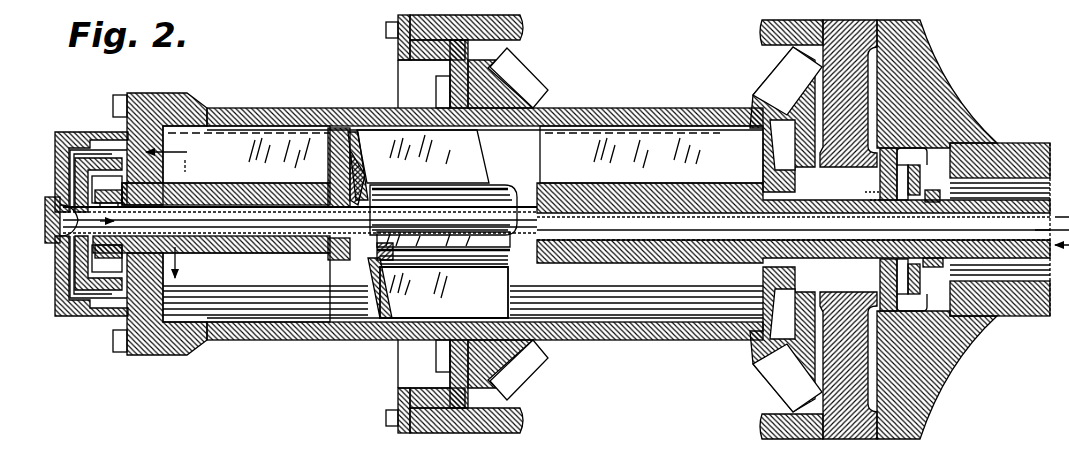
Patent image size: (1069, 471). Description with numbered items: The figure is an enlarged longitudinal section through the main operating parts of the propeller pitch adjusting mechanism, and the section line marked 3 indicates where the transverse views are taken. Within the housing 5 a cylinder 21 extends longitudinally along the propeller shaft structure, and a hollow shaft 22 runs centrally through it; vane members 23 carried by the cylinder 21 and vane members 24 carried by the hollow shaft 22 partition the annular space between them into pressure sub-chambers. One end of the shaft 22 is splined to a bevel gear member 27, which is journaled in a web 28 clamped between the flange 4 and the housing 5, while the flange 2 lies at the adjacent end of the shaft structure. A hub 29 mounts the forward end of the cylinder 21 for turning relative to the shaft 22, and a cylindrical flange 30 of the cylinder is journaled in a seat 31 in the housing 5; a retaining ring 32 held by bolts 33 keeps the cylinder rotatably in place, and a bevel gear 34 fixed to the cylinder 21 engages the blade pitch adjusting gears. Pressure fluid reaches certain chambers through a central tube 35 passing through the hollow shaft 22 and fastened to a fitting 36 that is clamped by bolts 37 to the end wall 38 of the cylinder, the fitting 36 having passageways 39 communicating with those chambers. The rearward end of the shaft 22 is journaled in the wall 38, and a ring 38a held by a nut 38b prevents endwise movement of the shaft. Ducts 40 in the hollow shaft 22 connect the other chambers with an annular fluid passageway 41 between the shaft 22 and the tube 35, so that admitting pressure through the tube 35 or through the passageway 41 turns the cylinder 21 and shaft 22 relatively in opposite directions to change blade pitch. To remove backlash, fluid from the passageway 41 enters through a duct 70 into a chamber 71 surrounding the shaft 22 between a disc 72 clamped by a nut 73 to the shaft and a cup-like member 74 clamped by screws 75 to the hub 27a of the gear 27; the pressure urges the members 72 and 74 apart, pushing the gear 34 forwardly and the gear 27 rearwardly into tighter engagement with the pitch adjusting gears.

The housing flange 2 is at (1003, 143).
The section line 3- 3 is at (258, 68).
The flange 4 is at (930, 85).
The housing 5 is at (520, 27).
The cylinder 21 is at (598, 108).
The hollow shaft 22 is at (530, 185).
The vane members 23 is at (360, 185).
The vane members 24 is at (432, 224).
The bevel gear member 27 is at (770, 82).
The hub 27a is at (845, 340).
The web 28 is at (860, 120).
The hub 29 is at (770, 185).
The cylindrical flange 30 is at (410, 62).
The seat 31 is at (398, 50).
The retaining ring 32 is at (398, 35).
The bolts 33 is at (386, 28).
The bevel gear 34 is at (525, 80).
The central tube 35 is at (278, 252).
The fitting 36 is at (62, 150).
The bolts 37 is at (105, 270).
The end wall 38 is at (127, 290).
The ring 38a is at (192, 164).
The nut 38b is at (75, 186).
The passageways 39 is at (70, 166).
The ducts 40 is at (205, 175).
The annular fluid passageway 41 is at (340, 160).
The duct 70 is at (902, 215).
The chamber 71 is at (905, 165).
The disc 72 is at (933, 165).
The nut 73 is at (943, 264).
The cup-like member 74 is at (882, 148).
The screws 75 is at (895, 213).